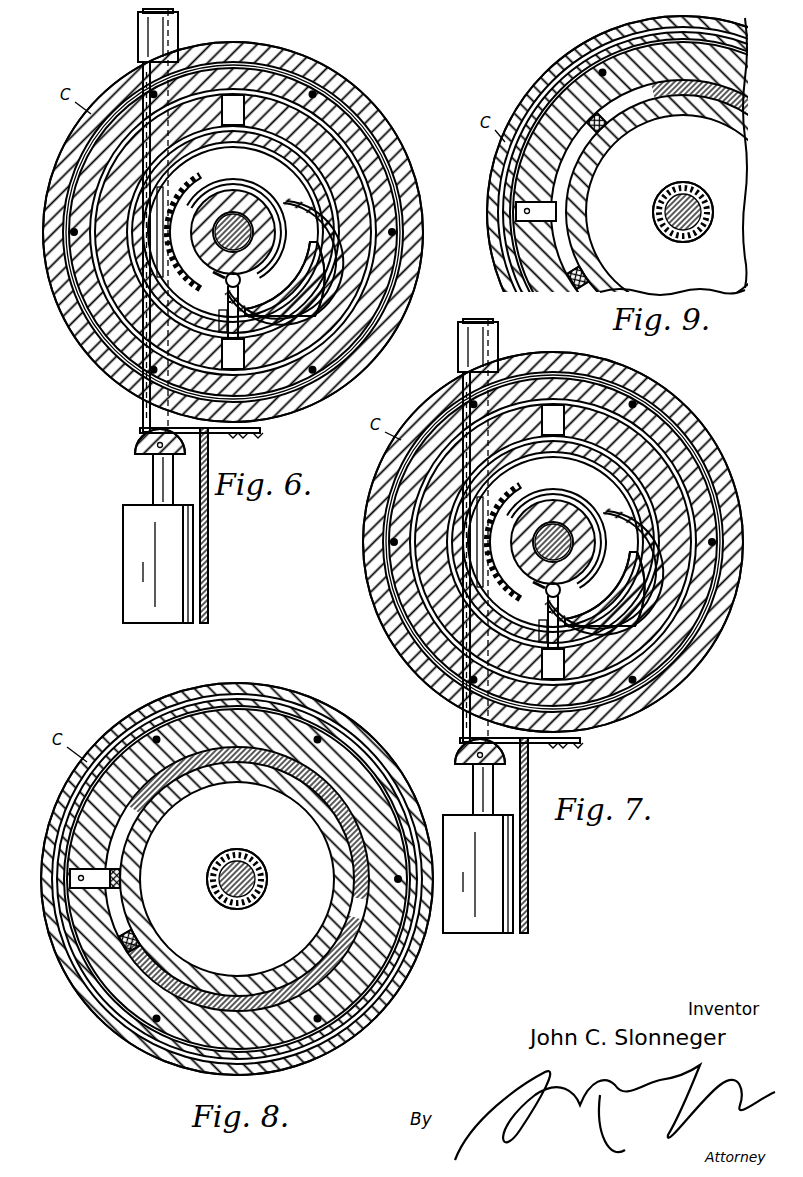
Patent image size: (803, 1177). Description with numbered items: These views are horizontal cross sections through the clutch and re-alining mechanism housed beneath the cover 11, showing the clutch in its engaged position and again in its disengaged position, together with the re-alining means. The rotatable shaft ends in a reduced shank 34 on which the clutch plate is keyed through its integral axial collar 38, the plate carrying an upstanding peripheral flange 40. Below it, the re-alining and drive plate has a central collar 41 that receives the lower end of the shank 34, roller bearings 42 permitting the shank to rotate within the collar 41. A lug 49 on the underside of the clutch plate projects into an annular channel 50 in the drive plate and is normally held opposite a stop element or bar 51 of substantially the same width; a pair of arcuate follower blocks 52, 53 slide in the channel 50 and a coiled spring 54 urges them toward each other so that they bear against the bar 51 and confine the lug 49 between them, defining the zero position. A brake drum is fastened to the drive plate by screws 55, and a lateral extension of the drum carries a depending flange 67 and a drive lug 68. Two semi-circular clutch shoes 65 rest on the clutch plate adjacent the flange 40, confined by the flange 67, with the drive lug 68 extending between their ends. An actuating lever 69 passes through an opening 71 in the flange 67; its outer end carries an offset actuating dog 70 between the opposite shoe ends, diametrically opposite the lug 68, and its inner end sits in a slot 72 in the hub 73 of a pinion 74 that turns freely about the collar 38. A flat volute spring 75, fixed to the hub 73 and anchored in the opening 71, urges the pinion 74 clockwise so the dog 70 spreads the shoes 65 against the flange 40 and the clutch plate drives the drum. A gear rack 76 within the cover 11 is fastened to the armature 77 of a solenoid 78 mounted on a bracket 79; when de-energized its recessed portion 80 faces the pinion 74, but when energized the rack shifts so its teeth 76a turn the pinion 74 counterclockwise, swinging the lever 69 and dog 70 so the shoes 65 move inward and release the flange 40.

In FIG. 6, the cover 11 is at (233, 231).
In FIG. 7, the cover 11 is at (553, 542).
In FIG. 8, the cover 11 is at (237, 879).
In FIG. 9, the cover 11 is at (645, 212).
In FIG. 6, the shank 34 is at (267, 212).
In FIG. 7, the shank 34 is at (584, 521).
In FIG. 8, the shank 34 is at (225, 890).
In FIG. 9, the shank 34 is at (699, 221).
In FIG. 6, the collar 38 is at (250, 217).
In FIG. 7, the collar 38 is at (564, 525).
In FIG. 6, the flange 40 is at (295, 232).
In FIG. 7, the flange 40 is at (497, 542).
In FIG. 8, the collar 41 is at (259, 878).
In FIG. 9, the collar 41 is at (669, 212).
In FIG. 8, the roller bearings 42 is at (244, 866).
In FIG. 9, the roller bearings 42 is at (686, 194).
In FIG. 8, the lug 49 is at (145, 877).
In FIG. 9, the lug 49 is at (623, 132).
In FIG. 8, the annular channel 50 is at (237, 879).
In FIG. 9, the annular channel 50 is at (683, 212).
In FIG. 8, the stop element or bar 51 is at (72, 894).
In FIG. 9, the stop element or bar 51 is at (571, 208).
In FIG. 8, the follower block 52 is at (223, 879).
In FIG. 9, the follower block 52 is at (658, 212).
In FIG. 8, the follower block 53 is at (89, 944).
In FIG. 9, the follower block 53 is at (608, 262).
In FIG. 8, the coiled spring 54 is at (246, 879).
In FIG. 9, the coiled spring 54 is at (686, 216).
In FIG. 6, the screws 55 is at (233, 232).
In FIG. 7, the screws 55 is at (553, 542).
In FIG. 8, the screws 55 is at (237, 879).
In FIG. 9, the screws 55 is at (645, 212).
In FIG. 6, the clutch shoes 65 is at (227, 232).
In FIG. 7, the clutch shoes 65 is at (528, 542).
In FIG. 6, the flange 67 is at (272, 232).
In FIG. 7, the flange 67 is at (513, 542).
In FIG. 6, the drive lug 68 is at (248, 70).
In FIG. 7, the drive lug 68 is at (568, 380).
In FIG. 6, the actuating lever 69 is at (250, 308).
In FIG. 7, the actuating lever 69 is at (582, 618).
In FIG. 6, the actuating dog 70 is at (265, 386).
In FIG. 7, the actuating dog 70 is at (595, 699).
In FIG. 6, the opening 71 is at (212, 314).
In FIG. 7, the opening 71 is at (553, 626).
In FIG. 6, the slot 72 is at (204, 283).
In FIG. 7, the slot 72 is at (578, 593).
In FIG. 6, the hub 73 is at (236, 211).
In FIG. 7, the hub 73 is at (556, 521).
In FIG. 6, the pinion 74 is at (193, 217).
In FIG. 7, the pinion 74 is at (433, 552).
In FIG. 6, the volute spring 75 is at (343, 263).
In FIG. 7, the volute spring 75 is at (663, 573).
In FIG. 6, the gear rack 76 is at (146, 223).
In FIG. 7, the gear rack 76 is at (511, 567).
In FIG. 6, the teeth 76a is at (91, 247).
In FIG. 7, the teeth 76a is at (503, 557).
In FIG. 6, the armature 77 is at (142, 467).
In FIG. 6, the solenoid 78 is at (136, 564).
In FIG. 7, the solenoid 78 is at (511, 874).
In FIG. 6, the bracket 79 is at (189, 525).
In FIG. 7, the bracket 79 is at (517, 835).
In FIG. 6, the recessed portion 80 is at (97, 247).
In FIG. 7, the recessed portion 80 is at (501, 557).